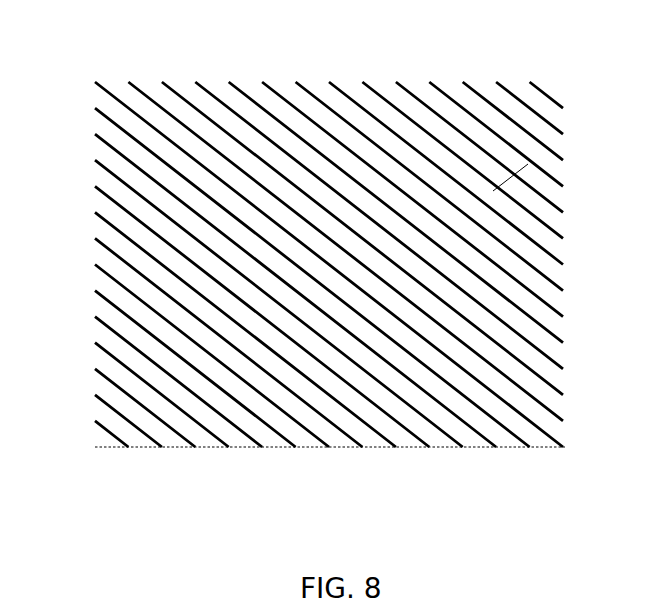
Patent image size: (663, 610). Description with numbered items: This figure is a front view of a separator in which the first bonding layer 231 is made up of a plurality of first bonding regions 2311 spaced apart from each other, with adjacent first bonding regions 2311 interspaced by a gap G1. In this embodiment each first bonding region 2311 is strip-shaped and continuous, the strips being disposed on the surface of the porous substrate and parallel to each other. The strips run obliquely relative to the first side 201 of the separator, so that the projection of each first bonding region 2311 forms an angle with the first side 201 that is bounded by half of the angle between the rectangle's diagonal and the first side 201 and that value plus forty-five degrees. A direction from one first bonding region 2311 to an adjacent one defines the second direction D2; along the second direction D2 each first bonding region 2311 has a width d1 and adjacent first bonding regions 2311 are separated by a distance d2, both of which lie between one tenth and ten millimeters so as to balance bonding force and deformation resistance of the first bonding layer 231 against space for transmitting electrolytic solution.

The first bonding layer 231 is at (557, 120).
The first bonding region 2311 is at (503, 82).
The gap G1 is at (483, 183).
The first side 201 is at (237, 441).
The second direction D2 is at (117, 17).
The width of the first bonding region d1 is at (450, 438).
The distance between adjacent first bonding regions d2 is at (523, 440).